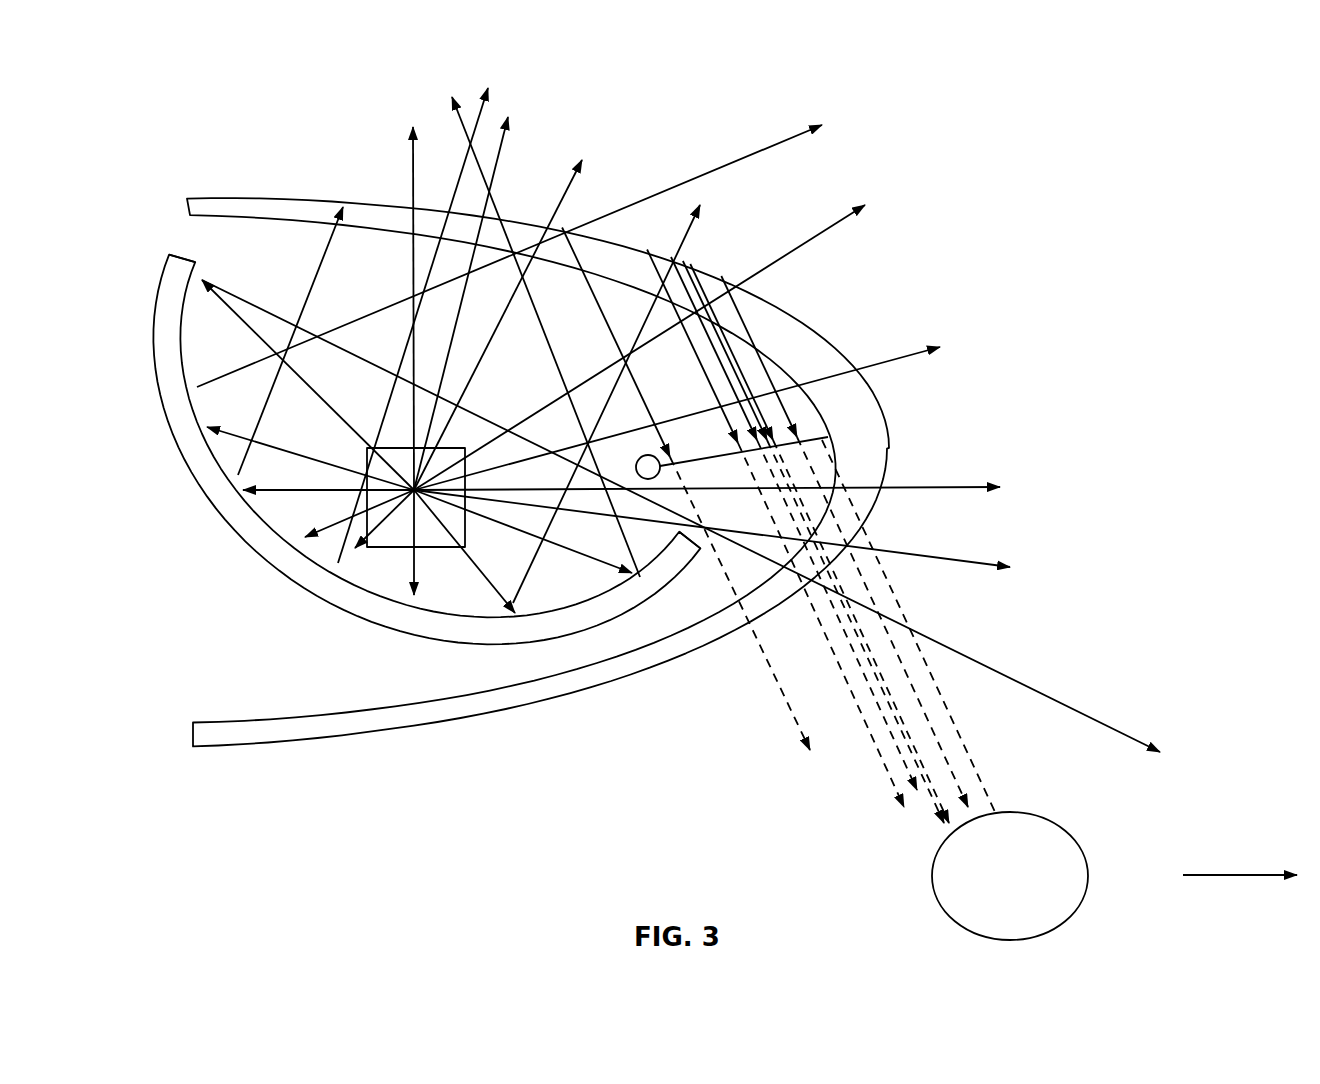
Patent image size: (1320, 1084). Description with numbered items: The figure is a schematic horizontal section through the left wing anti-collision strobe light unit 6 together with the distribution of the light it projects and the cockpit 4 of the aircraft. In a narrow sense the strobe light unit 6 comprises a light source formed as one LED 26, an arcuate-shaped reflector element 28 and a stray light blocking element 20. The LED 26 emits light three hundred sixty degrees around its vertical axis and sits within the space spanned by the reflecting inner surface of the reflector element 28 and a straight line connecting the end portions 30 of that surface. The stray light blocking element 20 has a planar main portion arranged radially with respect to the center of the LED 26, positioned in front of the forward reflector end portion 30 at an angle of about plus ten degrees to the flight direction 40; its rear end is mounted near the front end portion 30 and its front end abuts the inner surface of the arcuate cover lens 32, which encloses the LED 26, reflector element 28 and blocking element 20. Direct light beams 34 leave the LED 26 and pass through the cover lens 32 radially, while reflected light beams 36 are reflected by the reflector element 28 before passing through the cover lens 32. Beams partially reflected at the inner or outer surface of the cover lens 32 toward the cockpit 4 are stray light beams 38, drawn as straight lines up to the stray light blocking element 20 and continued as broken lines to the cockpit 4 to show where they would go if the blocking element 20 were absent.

The cockpit 4 is at (1055, 826).
The strobe light unit 6 is at (238, 129).
The stray light blocking element 20 is at (820, 440).
The LED 26 is at (380, 548).
The reflector element 28 is at (230, 507).
The end portions of the reflecting inner surface 30 is at (166, 258).
The arcuate cover lens 32 is at (800, 318).
The direct light beams 34 is at (410, 180).
The reflected light beams 36 is at (313, 280).
The stray light beams 38 is at (612, 330).
The flight direction 40 is at (1242, 873).